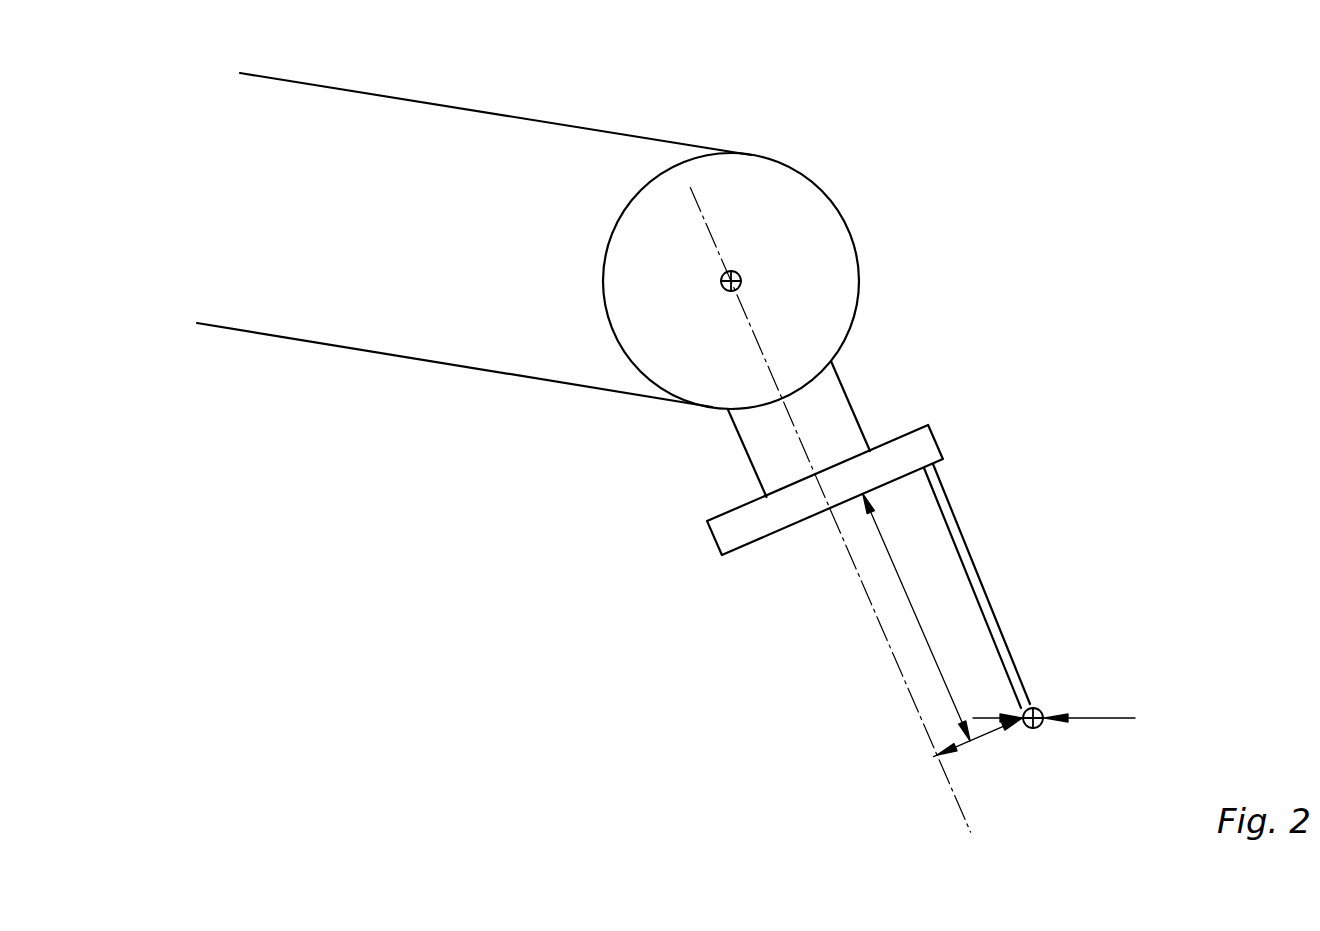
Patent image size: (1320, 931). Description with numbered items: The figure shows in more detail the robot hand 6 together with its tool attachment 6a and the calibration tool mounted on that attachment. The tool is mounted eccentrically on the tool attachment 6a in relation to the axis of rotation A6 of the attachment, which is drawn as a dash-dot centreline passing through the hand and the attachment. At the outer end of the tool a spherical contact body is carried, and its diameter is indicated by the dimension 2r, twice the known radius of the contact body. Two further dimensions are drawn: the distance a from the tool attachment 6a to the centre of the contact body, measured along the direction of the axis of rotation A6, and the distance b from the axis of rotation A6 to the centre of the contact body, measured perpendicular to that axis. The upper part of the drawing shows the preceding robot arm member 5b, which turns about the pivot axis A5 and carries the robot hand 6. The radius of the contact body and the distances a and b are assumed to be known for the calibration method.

The arm / belt strand 5b is at (475, 128).
The pivot axis of roller A5 is at (737, 272).
The robot hand 6 is at (828, 404).
The tool attachment 6a is at (919, 448).
The roller diameter 2r is at (1029, 596).
The distance from the tool attachment a is at (916, 617).
The distance from the axis of rotation b is at (978, 740).
The axis of rotation of the attachment A6 is at (952, 797).